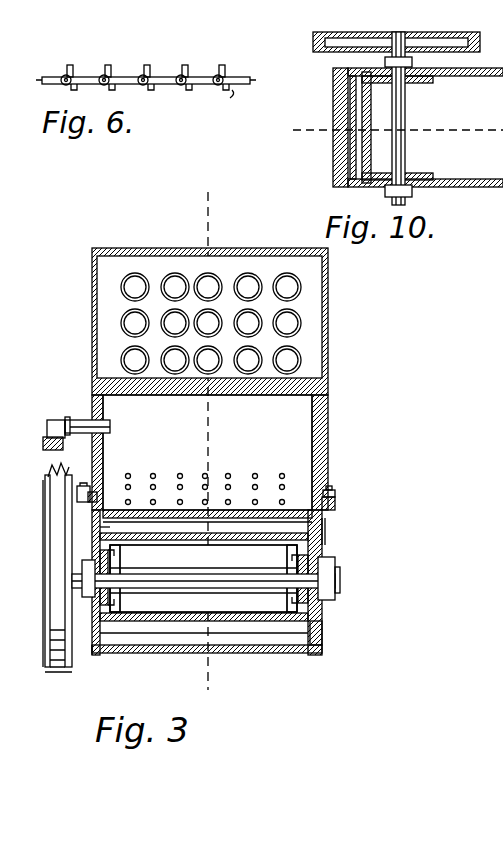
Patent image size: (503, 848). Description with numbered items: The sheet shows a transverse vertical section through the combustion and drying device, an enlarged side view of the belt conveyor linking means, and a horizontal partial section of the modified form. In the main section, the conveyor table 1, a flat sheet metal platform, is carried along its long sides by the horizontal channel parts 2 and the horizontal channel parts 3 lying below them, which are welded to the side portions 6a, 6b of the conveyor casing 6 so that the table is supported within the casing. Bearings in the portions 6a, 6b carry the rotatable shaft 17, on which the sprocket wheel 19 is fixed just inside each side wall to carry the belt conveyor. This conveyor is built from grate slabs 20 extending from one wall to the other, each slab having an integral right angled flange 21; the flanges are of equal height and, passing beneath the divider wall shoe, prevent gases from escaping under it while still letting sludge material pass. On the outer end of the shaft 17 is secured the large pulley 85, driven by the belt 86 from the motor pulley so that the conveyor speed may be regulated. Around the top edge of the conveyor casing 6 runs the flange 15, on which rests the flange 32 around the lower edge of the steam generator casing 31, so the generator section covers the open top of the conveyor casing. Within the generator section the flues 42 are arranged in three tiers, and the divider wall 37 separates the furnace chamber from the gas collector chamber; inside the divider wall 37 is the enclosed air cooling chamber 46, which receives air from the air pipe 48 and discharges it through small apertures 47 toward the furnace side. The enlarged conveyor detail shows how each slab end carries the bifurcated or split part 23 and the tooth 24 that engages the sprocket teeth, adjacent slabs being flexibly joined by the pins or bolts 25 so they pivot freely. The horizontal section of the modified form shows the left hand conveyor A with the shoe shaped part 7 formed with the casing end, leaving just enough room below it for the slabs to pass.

In FIG. 3, the conveyor table 1 is at (203, 443).
In FIG. 3, the horizontal channel parts 2 is at (118, 548).
In FIG. 3, the horizontal channel parts 3 is at (203, 582).
In FIG. 3, the conveyor casing 6 is at (318, 655).
In FIG. 3, the portion of the conveyor casing 6a is at (92, 646).
In FIG. 3, the portion of the conveyor casing 6b is at (322, 617).
In FIG. 10, the shoe shaped part 7 is at (398, 118).
In FIG. 3, the flange 15 is at (336, 502).
In FIG. 3, the rotatable shaft 17 is at (339, 581).
In FIG. 3, the sprocket wheel 19 is at (114, 580).
In FIG. 6, the grate slab 20 is at (112, 72).
In FIG. 3, the grate slab 20 is at (216, 552).
In FIG. 6, the ledge or flange 21 is at (76, 74).
In FIG. 3, the ledge or flange 21 is at (290, 527).
In FIG. 6, the bifurcated or split part 23 is at (68, 72).
In FIG. 6, the tooth 24 is at (70, 90).
In FIG. 6, the pins or bolts 25 is at (150, 74).
In FIG. 3, the steam generator casing 31 is at (121, 250).
In FIG. 3, the flange 32 is at (103, 490).
In FIG. 3, the divider wall 37 is at (298, 412).
In FIG. 3, the flues 42 is at (302, 320).
In FIG. 3, the air cooling chamber 46 is at (304, 438).
In FIG. 3, the air outlets or apertures 47 is at (262, 468).
In FIG. 3, the air pipe 48 is at (56, 420).
In FIG. 3, the large pulley 85 is at (45, 553).
In FIG. 3, the belt 86 is at (54, 472).
In FIG. 10, the conveyor A is at (362, 145).